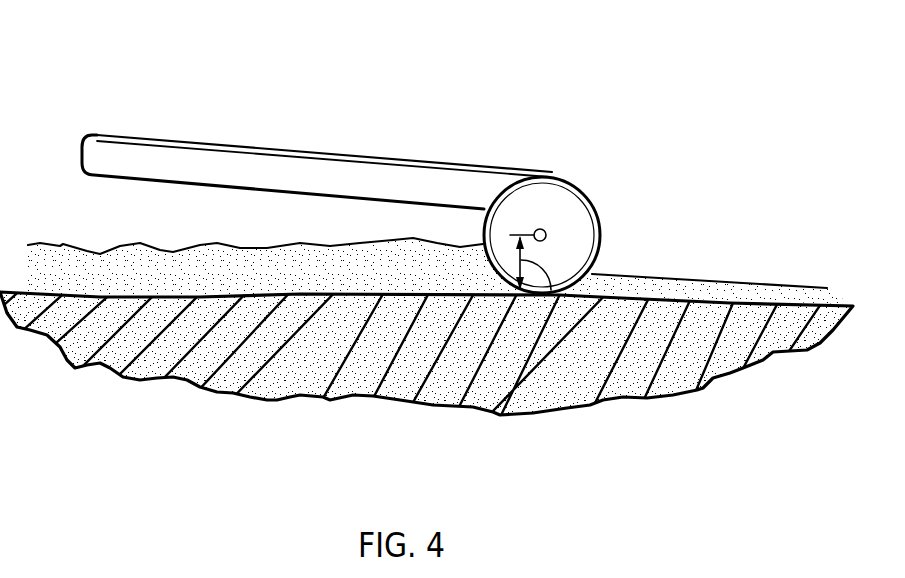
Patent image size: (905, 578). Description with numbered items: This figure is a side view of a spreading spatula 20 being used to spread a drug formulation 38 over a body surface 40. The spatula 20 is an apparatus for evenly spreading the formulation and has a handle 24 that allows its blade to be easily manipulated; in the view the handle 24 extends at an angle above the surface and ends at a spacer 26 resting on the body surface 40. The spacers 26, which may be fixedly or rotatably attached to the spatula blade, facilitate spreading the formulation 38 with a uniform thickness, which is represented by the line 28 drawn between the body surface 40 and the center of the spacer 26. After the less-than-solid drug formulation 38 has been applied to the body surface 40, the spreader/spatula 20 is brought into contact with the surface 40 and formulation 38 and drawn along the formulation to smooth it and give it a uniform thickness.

The spreading spatula 20 is at (363, 243).
The handle 24 is at (243, 160).
The spacers 26 is at (563, 202).
The line 28 is at (555, 290).
The formulation 38 is at (757, 296).
The body surface 40 is at (647, 375).